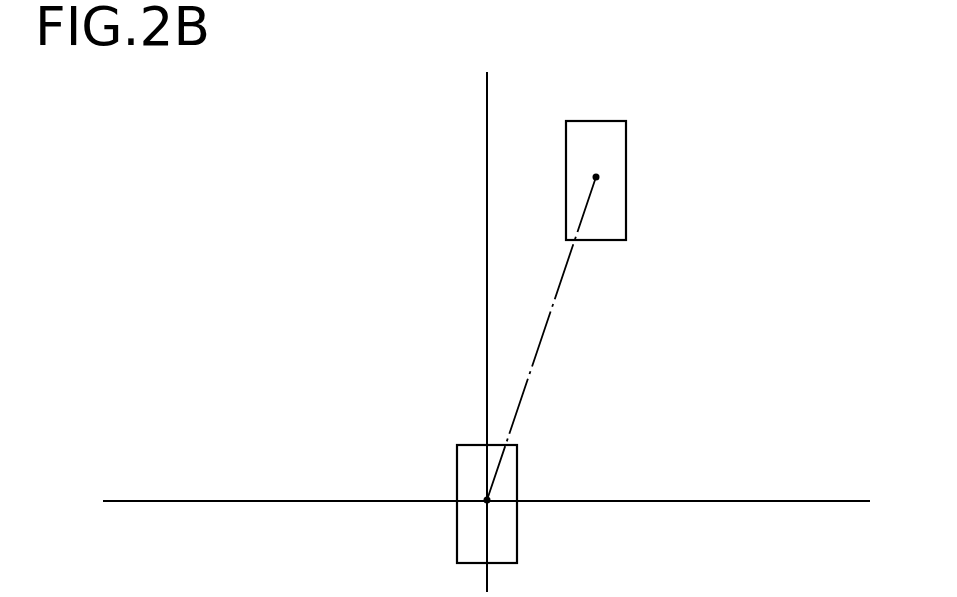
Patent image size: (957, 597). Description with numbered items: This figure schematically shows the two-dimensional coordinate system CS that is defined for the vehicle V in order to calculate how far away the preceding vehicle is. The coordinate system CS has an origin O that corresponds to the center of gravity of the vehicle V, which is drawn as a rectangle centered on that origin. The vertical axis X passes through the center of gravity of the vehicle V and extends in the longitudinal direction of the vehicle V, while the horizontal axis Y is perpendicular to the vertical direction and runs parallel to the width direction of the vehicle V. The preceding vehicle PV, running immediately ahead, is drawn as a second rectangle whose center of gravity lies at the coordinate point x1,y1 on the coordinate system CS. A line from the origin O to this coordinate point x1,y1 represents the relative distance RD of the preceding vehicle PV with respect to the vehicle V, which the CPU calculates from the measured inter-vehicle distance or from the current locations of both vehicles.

The two-dimensional coordinate system CS is at (486, 322).
The vertical axis X is at (471, 321).
The horizontal axis Y is at (486, 527).
The vehicle V is at (484, 521).
The origin O is at (490, 503).
The preceding vehicle PV is at (619, 168).
The coordinate point x1,y1 is at (598, 175).
The relative distance RD is at (540, 347).